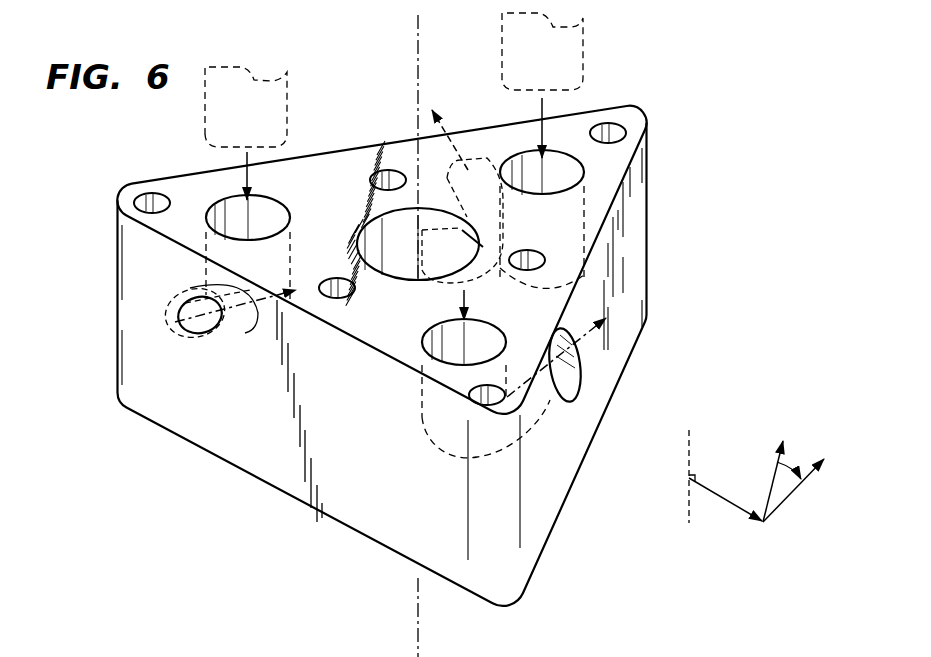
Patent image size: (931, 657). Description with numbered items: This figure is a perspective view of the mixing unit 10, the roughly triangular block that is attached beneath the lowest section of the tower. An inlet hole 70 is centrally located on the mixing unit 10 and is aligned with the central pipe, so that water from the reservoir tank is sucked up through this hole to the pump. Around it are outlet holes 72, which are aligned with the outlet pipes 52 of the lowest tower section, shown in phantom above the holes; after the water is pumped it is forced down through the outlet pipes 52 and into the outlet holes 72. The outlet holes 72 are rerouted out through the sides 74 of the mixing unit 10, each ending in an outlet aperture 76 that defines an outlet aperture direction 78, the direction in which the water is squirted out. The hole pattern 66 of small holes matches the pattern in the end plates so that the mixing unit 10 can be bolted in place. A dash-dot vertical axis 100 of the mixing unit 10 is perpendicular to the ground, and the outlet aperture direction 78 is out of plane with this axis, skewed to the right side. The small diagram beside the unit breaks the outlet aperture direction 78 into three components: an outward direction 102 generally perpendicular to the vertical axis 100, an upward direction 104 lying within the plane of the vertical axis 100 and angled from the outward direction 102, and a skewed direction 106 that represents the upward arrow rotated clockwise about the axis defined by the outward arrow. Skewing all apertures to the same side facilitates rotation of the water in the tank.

The mixing unit 10 is at (648, 213).
The outlet pipes 52 is at (290, 97).
The hole pattern 66 is at (150, 196).
The inlet hole 70 is at (402, 225).
The outlet holes 72 is at (565, 165).
The sides 74 is at (282, 411).
The outlet aperture 76 is at (480, 160).
The outlet aperture direction 78 is at (432, 108).
The vertical axis 100 is at (416, 46).
The outward direction 102 is at (707, 498).
The upward direction 104 is at (777, 480).
The skewed direction 106 is at (802, 492).